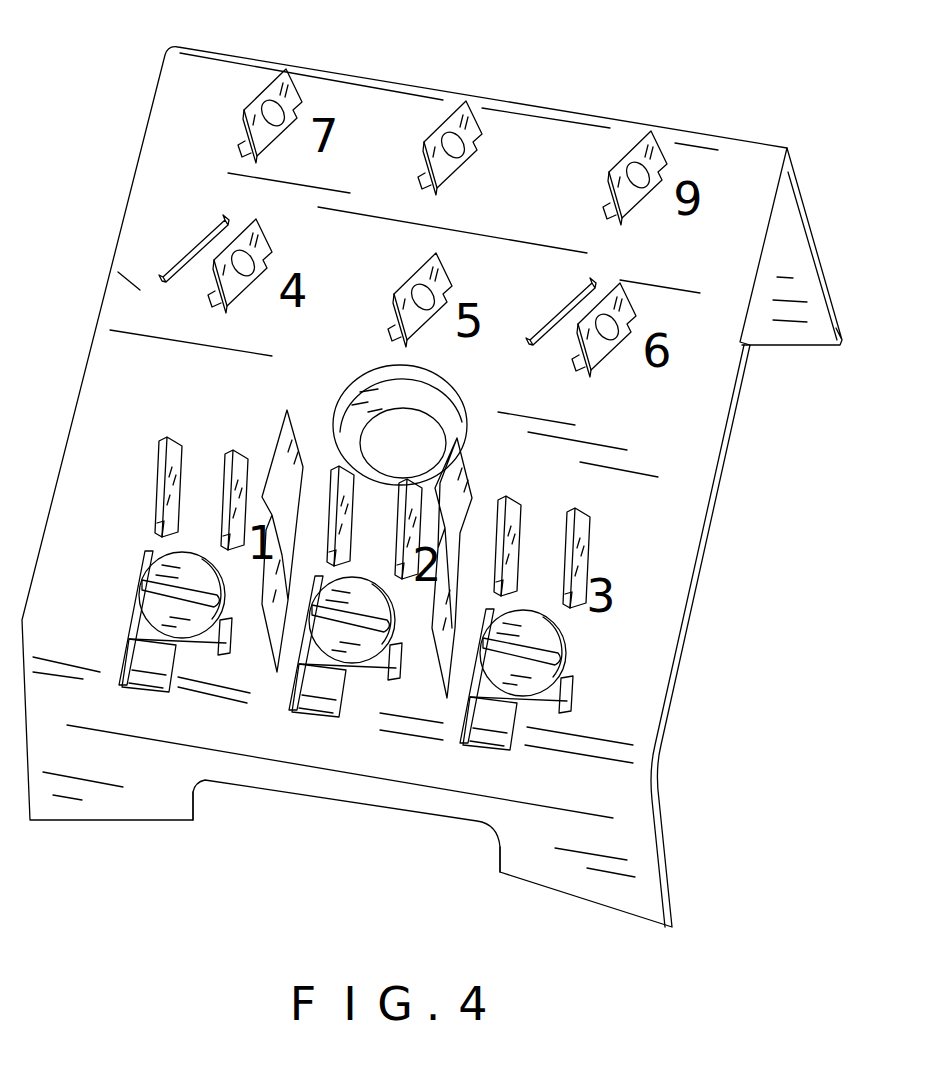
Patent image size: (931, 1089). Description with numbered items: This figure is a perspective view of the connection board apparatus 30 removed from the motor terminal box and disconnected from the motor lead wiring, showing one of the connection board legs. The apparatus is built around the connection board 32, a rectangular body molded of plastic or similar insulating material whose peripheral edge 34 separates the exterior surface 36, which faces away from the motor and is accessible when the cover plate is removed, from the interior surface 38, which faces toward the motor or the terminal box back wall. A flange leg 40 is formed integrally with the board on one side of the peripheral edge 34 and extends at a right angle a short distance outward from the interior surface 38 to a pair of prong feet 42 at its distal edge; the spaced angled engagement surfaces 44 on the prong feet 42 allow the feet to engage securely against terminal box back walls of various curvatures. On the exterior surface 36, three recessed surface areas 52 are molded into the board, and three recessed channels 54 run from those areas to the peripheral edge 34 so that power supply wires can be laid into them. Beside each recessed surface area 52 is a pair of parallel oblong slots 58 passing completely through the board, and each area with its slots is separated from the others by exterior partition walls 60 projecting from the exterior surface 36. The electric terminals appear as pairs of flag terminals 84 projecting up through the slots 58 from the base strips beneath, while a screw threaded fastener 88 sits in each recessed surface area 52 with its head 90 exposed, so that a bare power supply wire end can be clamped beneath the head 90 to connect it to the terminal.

The connection board apparatus 30 is at (626, 108).
The connection board 32 is at (693, 433).
The peripheral edge 34 is at (355, 66).
The exterior surface 36 is at (135, 282).
The interior surface 38 is at (664, 683).
The flange leg 40 is at (787, 227).
The prong foot 42 is at (798, 343).
The angled engagement surface 44 is at (772, 347).
The recessed surface area 52 is at (144, 553).
The recessed channel 54 is at (158, 528).
The slot 58 is at (228, 544).
The exterior partition wall 60 is at (335, 447).
The flag terminal 84 is at (318, 488).
The screw threaded fastener 88 is at (147, 620).
The head 90 is at (147, 600).